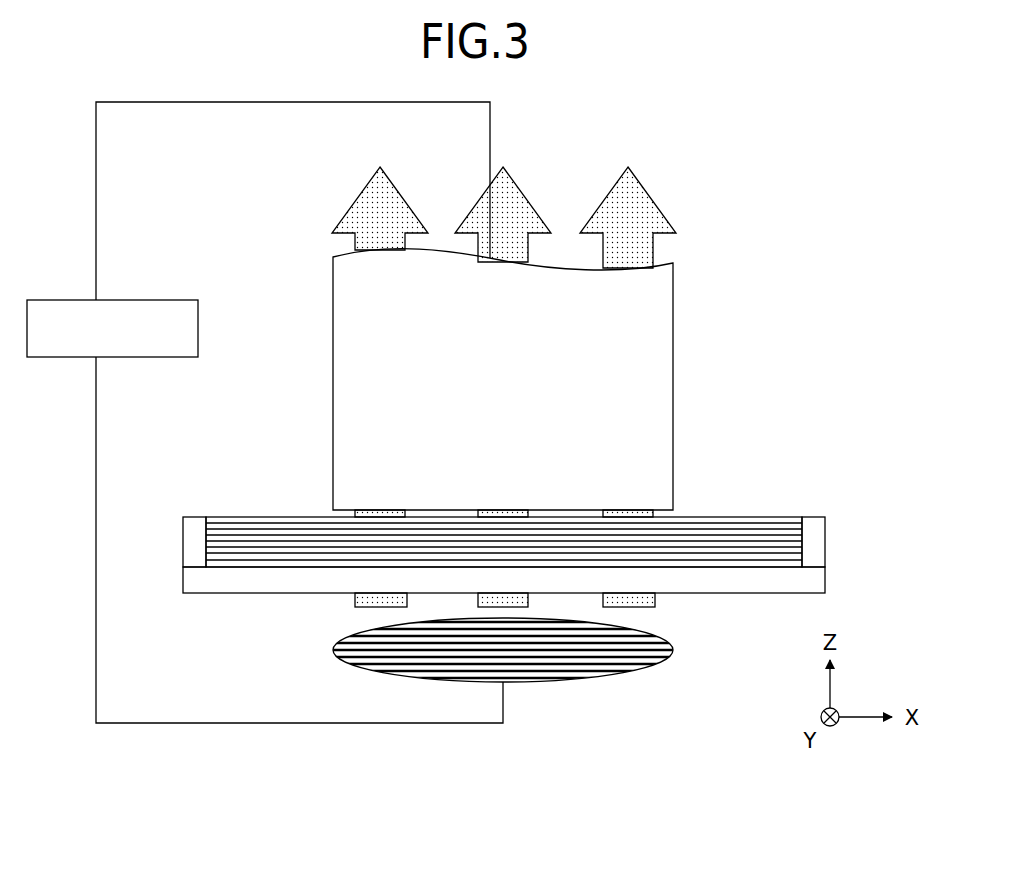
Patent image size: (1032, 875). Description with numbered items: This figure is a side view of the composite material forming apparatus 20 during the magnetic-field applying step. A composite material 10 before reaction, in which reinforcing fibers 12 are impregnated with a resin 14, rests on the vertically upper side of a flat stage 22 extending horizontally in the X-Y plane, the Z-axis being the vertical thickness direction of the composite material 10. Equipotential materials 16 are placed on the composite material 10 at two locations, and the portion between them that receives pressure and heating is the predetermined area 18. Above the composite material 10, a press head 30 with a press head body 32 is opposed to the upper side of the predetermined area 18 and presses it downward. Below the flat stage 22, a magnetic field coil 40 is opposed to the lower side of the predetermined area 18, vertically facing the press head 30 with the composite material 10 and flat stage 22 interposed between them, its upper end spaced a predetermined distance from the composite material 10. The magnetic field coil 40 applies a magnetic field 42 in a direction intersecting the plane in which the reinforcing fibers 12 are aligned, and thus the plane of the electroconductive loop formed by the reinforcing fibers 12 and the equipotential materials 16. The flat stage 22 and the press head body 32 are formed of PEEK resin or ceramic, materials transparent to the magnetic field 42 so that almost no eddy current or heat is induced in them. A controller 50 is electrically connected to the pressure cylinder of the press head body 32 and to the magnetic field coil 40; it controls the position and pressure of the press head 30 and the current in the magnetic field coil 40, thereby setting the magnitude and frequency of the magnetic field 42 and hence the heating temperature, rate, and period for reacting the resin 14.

The composite material 10 is at (747, 492).
The reinforcing fibers 12 is at (316, 516).
The resin 14 is at (259, 514).
The equipotential materials 16 is at (196, 526).
The predetermined area 18 is at (503, 553).
The composite material forming apparatus 20 is at (695, 144).
The flat stage 22 is at (193, 583).
The press head 30 is at (546, 379).
The press head body 32 is at (655, 392).
The magnetic field coil 40 is at (332, 650).
The magnetic field 42 is at (347, 212).
The controller 50 is at (198, 328).